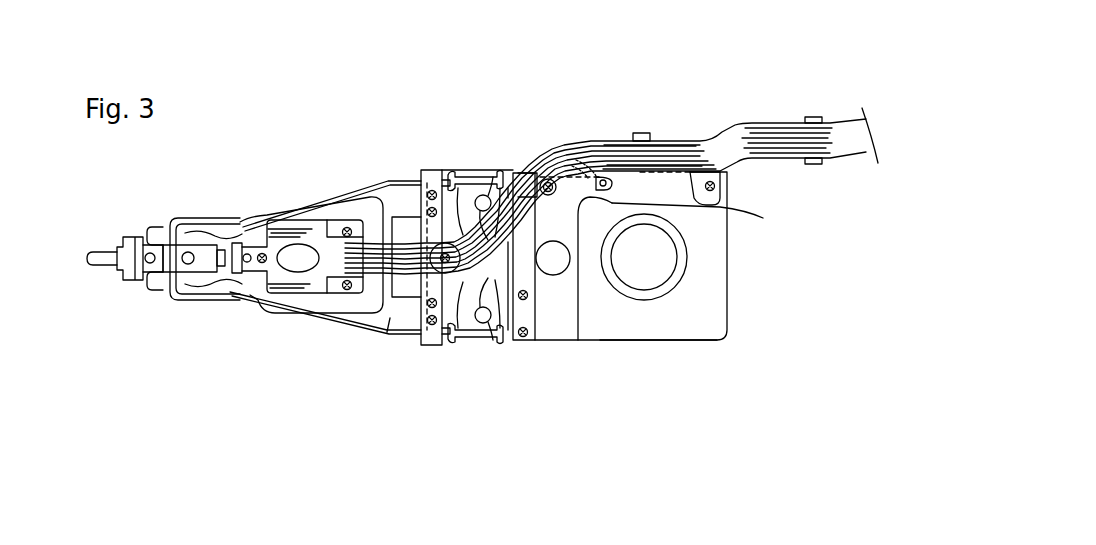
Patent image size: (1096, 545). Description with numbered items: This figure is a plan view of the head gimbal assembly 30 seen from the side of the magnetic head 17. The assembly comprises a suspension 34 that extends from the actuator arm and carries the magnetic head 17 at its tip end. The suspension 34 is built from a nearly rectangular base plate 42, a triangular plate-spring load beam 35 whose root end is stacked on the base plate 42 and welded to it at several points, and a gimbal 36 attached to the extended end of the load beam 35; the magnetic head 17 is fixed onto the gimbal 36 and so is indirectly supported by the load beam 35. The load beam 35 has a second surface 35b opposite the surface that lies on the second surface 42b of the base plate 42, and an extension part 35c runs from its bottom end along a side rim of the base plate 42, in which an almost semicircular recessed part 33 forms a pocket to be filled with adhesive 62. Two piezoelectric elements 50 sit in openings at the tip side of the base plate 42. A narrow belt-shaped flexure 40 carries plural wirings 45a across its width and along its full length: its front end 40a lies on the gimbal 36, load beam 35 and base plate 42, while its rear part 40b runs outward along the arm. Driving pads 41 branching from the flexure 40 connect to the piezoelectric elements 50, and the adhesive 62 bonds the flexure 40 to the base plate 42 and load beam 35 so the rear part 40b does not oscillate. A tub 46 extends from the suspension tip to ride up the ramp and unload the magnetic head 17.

The magnetic head 17 is at (205, 272).
The head gimbal assembly 30 is at (468, 123).
The recessed part 33 is at (702, 217).
The suspension 34 is at (432, 390).
The load beam 35 is at (347, 321).
The second surface of load beam 35b is at (390, 320).
The extension part 35c is at (603, 300).
The gimbal 36 is at (220, 292).
The flexure 40 is at (614, 128).
The front end of flexure 40a is at (404, 242).
The rear part of flexure 40b is at (758, 128).
The driving pad 41 is at (482, 180).
The base plate 42 is at (574, 342).
The second surface of base plate 42b is at (656, 330).
The wirings 45a is at (673, 167).
The tub 46 is at (100, 257).
The piezoelectric element 50 is at (463, 180).
The adhesive 62 is at (587, 173).